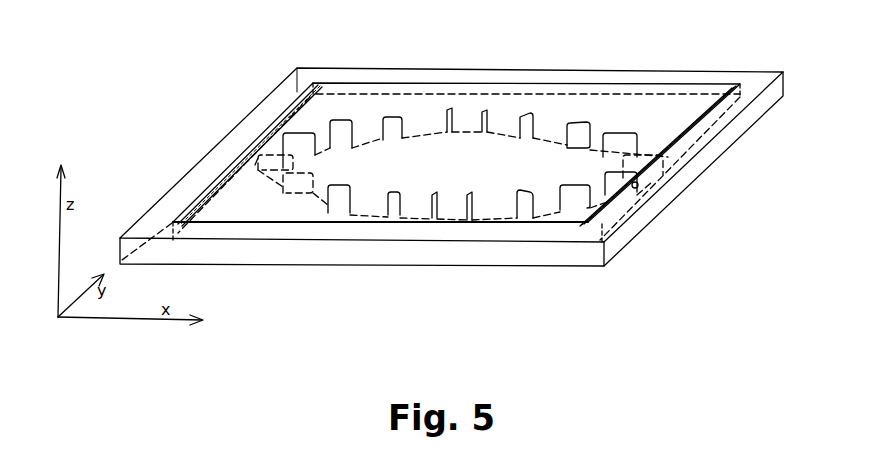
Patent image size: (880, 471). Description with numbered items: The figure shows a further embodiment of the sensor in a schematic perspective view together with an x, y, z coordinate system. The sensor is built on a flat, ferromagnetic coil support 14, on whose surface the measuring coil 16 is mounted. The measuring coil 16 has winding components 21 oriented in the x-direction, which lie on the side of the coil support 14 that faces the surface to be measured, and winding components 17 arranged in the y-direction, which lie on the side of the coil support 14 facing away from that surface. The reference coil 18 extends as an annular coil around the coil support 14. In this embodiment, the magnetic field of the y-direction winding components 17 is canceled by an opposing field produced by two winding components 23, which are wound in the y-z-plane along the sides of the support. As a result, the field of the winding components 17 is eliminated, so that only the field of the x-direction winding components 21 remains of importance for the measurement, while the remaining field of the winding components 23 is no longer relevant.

The coil support 14 is at (362, 252).
The measuring coil 16 is at (585, 224).
The winding components arranged in the y-direction 17 is at (247, 150).
The reference coil 18 is at (585, 123).
The winding components oriented in the x-direction 21 is at (427, 224).
The winding components 23 is at (238, 150).